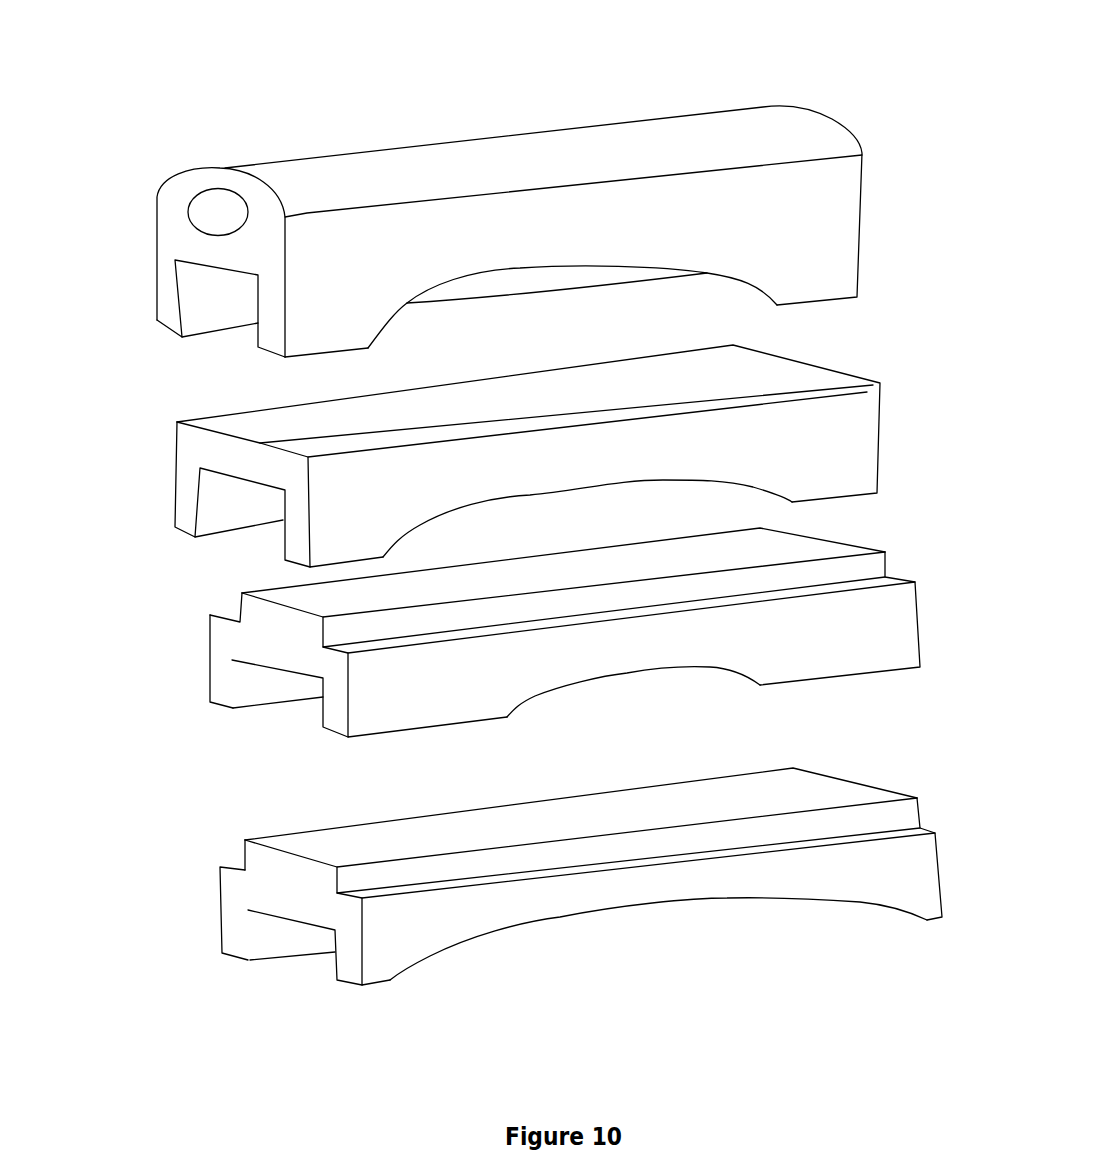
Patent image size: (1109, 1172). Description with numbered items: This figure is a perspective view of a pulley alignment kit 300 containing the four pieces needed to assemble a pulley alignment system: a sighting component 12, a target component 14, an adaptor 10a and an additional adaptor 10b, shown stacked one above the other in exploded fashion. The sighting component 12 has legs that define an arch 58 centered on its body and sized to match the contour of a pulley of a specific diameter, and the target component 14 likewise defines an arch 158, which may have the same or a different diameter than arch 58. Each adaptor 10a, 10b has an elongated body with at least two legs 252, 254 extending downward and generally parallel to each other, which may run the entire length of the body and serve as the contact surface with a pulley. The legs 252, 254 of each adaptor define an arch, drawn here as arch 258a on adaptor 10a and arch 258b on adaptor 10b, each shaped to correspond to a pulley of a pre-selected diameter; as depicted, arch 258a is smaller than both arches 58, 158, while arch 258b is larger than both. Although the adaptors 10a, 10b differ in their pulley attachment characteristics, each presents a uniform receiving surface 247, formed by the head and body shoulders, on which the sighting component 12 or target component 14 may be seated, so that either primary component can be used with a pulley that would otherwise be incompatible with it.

The pulley alignment kit 300 is at (284, 112).
The sighting component 12 is at (160, 166).
The target component 14 is at (160, 418).
The adaptor 10a is at (184, 604).
The additional adaptor 10b is at (217, 829).
The arch 58 is at (523, 269).
The arch 158 is at (563, 489).
The receiving surface 247 is at (885, 578).
The leg 252 is at (337, 717).
The leg 254 is at (225, 693).
The arch 258a is at (622, 674).
The arch 258b is at (625, 904).